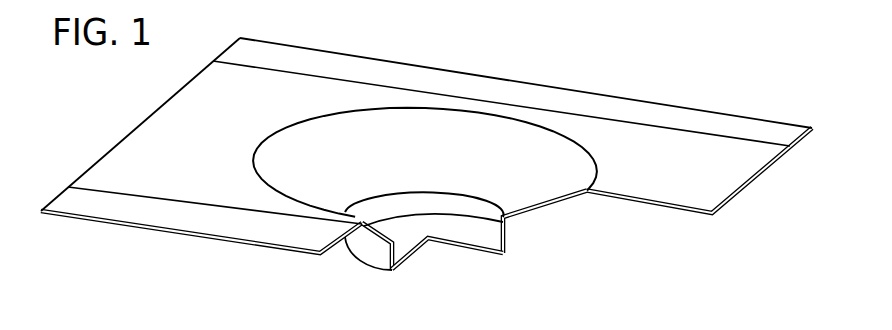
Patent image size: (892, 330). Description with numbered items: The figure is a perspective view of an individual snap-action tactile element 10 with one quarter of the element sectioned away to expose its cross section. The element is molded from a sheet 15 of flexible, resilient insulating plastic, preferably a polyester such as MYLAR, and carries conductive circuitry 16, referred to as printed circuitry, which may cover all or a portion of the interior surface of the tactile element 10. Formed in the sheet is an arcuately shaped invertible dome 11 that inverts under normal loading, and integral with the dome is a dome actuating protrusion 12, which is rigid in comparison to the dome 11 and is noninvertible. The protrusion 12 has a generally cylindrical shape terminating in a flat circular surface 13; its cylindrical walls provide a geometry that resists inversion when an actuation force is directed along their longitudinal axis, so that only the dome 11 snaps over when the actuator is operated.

The snap-action tactile element 10 is at (458, 104).
The invertible dome 11 is at (523, 140).
The dome actuating protrusion 12 is at (509, 240).
The flat circular surface 13 is at (440, 229).
The sheet 15 is at (256, 230).
The conductive circuitry 16 is at (127, 166).